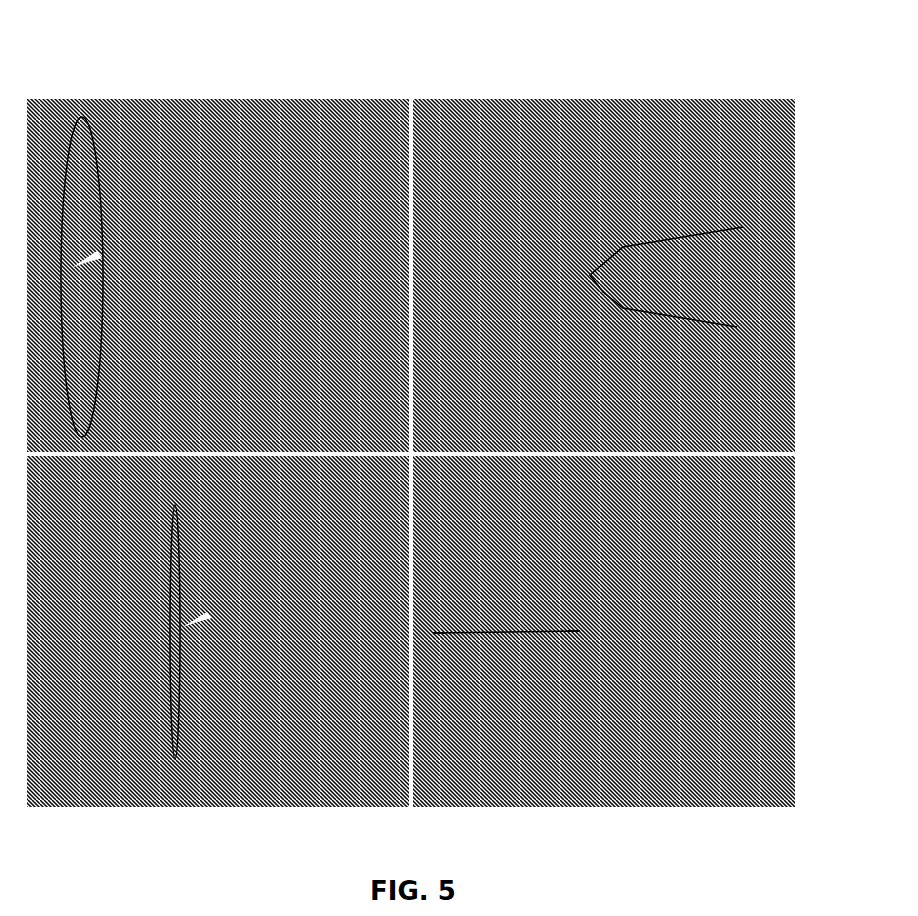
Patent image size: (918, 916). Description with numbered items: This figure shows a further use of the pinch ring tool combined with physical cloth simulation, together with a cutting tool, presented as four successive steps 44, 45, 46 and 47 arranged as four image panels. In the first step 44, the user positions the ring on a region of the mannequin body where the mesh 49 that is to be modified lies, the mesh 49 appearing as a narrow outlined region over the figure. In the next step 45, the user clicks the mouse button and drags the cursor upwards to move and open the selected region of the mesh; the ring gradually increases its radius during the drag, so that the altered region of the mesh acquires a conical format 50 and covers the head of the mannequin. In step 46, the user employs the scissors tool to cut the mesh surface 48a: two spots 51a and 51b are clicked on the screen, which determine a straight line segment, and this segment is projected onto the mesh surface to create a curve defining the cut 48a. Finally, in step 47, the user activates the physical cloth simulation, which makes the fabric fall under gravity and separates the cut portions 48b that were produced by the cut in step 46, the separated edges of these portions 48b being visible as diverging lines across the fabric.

The first step 44 is at (113, 812).
The second step 45 is at (137, 95).
The third step 46 is at (508, 812).
The fourth step 47 is at (528, 95).
The mesh surface cut 48a is at (514, 645).
The cut portions 48b is at (675, 230).
The mesh 49 is at (195, 585).
The conical format 50 is at (90, 228).
The first spot 51a is at (440, 627).
The second spot 51b is at (590, 627).